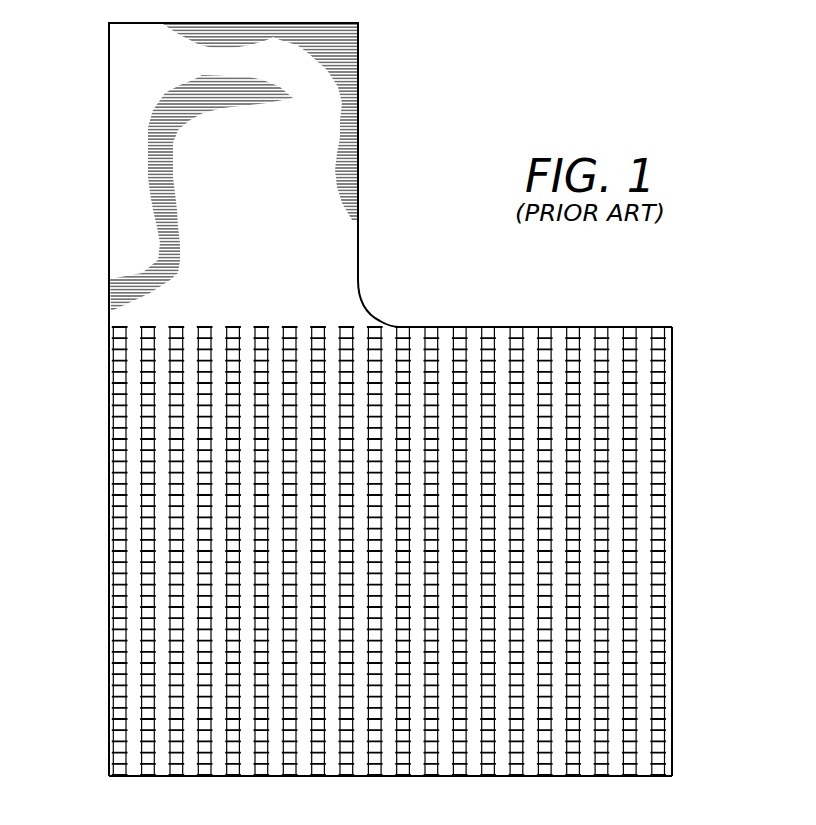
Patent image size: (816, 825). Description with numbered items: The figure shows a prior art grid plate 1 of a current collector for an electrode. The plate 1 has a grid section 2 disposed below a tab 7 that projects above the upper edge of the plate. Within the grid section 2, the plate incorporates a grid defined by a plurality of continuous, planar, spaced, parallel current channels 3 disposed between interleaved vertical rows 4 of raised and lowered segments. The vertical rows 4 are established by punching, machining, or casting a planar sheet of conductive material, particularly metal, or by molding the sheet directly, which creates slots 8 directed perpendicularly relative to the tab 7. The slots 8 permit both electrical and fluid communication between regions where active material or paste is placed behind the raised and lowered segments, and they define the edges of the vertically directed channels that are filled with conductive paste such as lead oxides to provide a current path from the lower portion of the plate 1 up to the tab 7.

The grid plate 1 is at (398, 269).
The grid section 2 is at (675, 366).
The current channels 3 is at (536, 325).
The vertical rows 4 is at (486, 762).
The tab 7 is at (109, 185).
The slots 8 is at (659, 548).